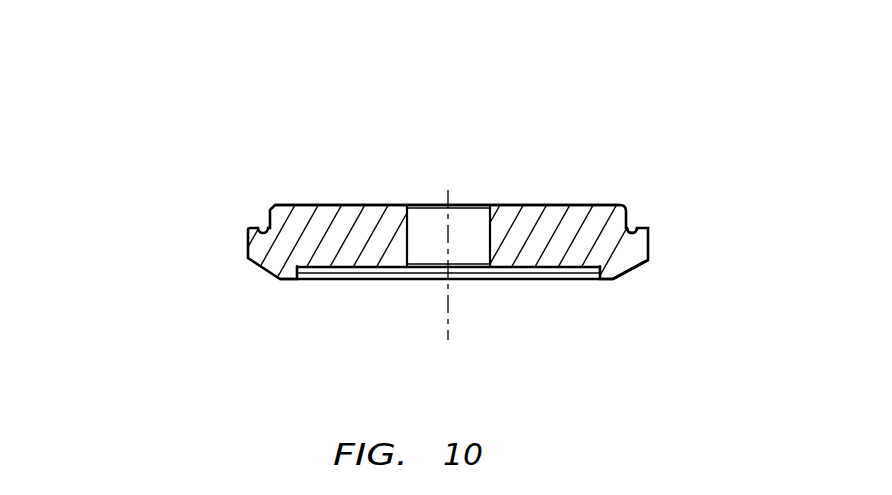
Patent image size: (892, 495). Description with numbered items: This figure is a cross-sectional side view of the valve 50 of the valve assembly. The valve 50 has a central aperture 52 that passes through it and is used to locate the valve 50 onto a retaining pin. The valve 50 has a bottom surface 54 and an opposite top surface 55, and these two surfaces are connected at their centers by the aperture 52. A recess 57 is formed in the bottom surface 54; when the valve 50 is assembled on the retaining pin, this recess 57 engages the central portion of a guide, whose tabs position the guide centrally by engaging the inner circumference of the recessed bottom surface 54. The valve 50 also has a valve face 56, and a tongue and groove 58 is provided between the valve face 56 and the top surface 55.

The valve 50 is at (177, 119).
The aperture 52 is at (469, 217).
The bottom surface 54 is at (347, 280).
The top surface 55 is at (332, 204).
The valve face 56 is at (628, 270).
The recess 57 is at (529, 272).
The tongue and groove 58 is at (634, 227).